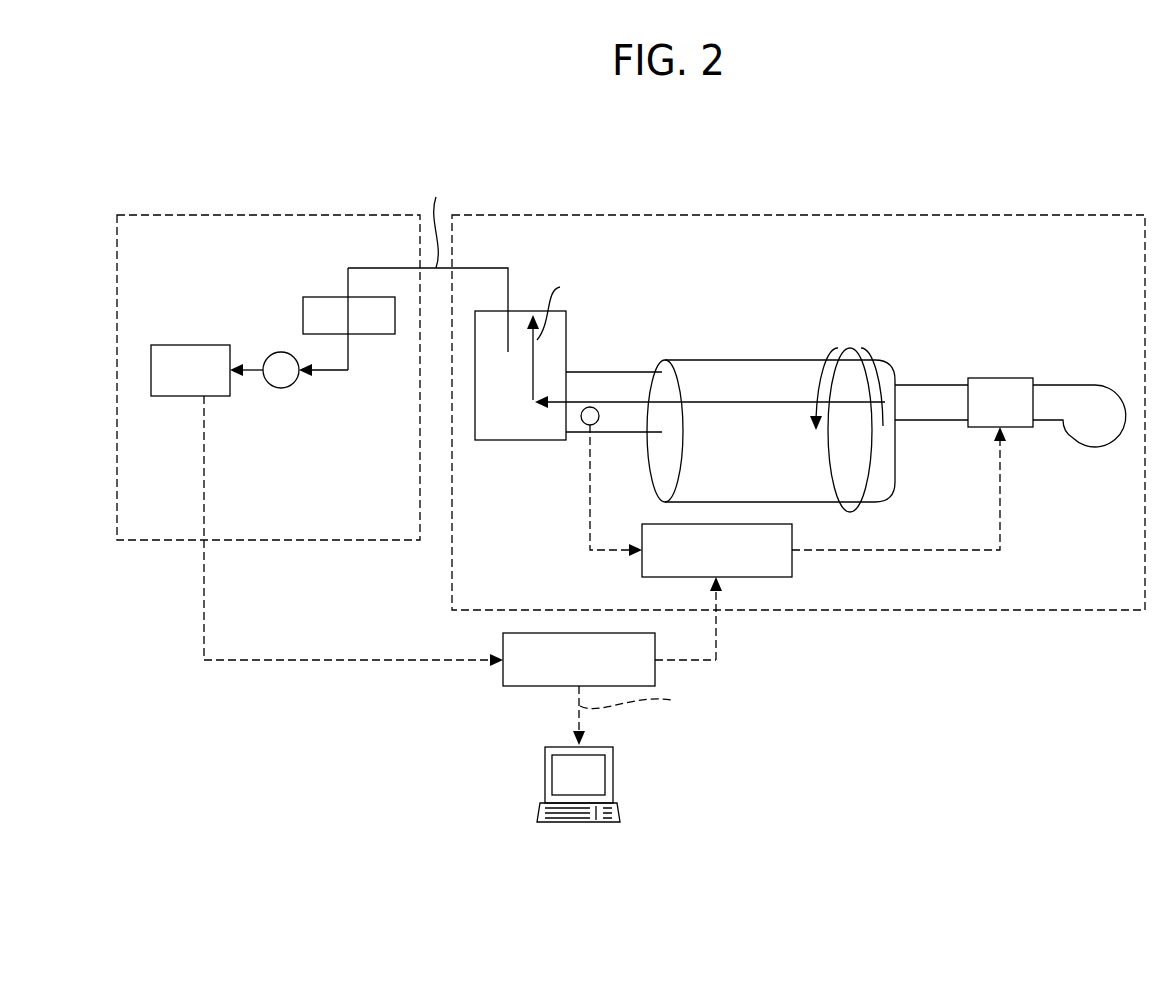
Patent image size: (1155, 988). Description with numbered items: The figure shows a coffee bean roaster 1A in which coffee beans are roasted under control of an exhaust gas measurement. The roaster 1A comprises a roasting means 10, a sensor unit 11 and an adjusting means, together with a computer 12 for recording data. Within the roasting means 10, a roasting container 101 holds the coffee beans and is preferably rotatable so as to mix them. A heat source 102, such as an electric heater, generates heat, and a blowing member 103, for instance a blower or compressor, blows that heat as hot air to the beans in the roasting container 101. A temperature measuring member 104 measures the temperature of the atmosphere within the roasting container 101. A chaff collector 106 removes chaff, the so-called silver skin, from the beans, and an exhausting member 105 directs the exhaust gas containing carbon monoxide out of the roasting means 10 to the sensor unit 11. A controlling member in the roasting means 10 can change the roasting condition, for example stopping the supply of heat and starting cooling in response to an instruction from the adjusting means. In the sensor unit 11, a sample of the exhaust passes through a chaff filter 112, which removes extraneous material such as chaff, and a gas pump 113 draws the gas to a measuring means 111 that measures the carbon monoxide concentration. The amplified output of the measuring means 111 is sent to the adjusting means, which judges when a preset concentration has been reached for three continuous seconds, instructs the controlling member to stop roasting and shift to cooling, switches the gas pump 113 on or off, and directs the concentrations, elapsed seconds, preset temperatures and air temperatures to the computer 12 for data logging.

The roaster 1A is at (1096, 155).
The roasting means 10 is at (865, 213).
The sensor unit 11 is at (278, 213).
The computer 12 is at (614, 768).
The roasting container 101 is at (888, 360).
The heat source 102 is at (1018, 378).
The blowing member 103 is at (1090, 448).
The temperature measuring member 104 is at (589, 425).
The exhausting member 105 is at (508, 330).
The chaff collector 106 is at (567, 355).
The measuring means 111 is at (186, 345).
The chaff filter 112 is at (318, 297).
The gas pump 113 is at (281, 388).